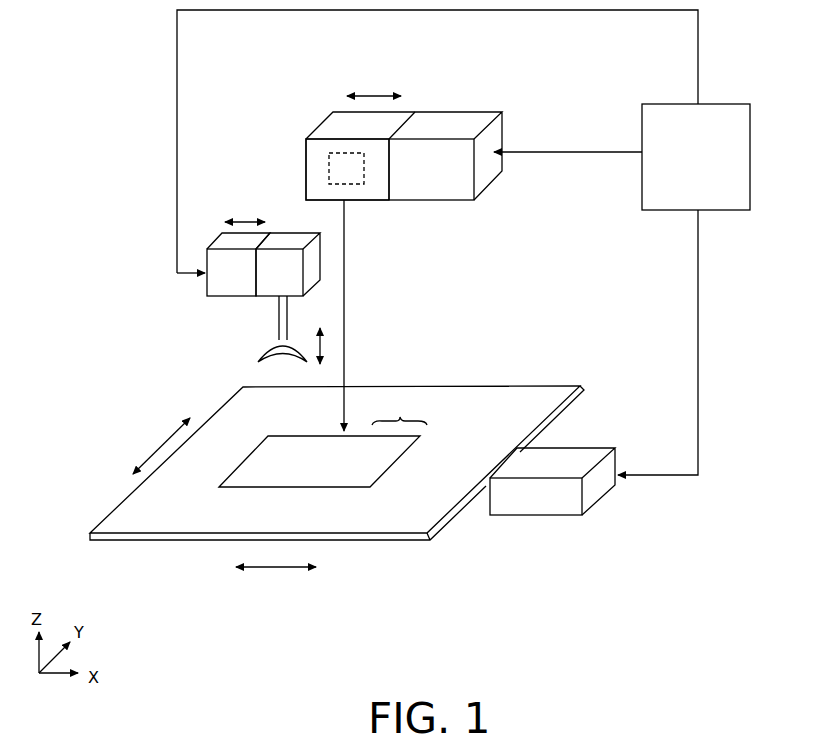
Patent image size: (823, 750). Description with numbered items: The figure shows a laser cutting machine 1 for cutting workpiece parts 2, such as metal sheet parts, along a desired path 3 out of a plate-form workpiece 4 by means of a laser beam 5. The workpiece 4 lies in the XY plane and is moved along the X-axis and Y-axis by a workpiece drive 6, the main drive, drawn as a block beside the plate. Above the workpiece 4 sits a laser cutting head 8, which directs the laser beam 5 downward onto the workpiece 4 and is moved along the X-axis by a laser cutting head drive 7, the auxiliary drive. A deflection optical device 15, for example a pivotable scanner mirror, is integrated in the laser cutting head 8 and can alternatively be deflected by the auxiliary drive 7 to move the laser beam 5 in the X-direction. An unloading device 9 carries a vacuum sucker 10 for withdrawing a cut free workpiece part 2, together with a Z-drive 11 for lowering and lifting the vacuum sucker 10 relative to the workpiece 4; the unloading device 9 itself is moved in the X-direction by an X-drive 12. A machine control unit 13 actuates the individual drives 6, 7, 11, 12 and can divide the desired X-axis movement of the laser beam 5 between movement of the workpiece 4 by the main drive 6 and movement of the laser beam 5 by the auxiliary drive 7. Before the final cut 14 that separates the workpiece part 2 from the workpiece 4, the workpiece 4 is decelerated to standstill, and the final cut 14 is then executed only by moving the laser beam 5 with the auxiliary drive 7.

The laser cutting machine 1 is at (141, 158).
The workpiece part 2 is at (344, 460).
The desired path 3 is at (228, 468).
The workpiece 4 is at (428, 505).
The laser beam 5 is at (347, 296).
The workpiece drive 6 is at (560, 497).
The laser cutting head drive 7 is at (458, 125).
The laser cutting head 8 is at (318, 178).
The unloading device 9 is at (266, 306).
The vacuum sucker 10 is at (258, 344).
The Z-drive 11 is at (290, 283).
The X-drive 12 is at (242, 283).
The machine control unit 13 is at (708, 167).
The final cut 14 is at (399, 410).
The deflection optical device 15 is at (330, 165).